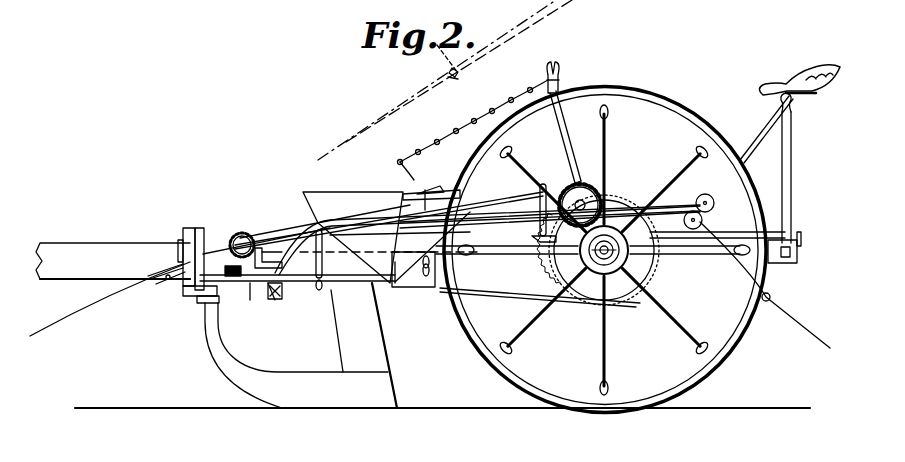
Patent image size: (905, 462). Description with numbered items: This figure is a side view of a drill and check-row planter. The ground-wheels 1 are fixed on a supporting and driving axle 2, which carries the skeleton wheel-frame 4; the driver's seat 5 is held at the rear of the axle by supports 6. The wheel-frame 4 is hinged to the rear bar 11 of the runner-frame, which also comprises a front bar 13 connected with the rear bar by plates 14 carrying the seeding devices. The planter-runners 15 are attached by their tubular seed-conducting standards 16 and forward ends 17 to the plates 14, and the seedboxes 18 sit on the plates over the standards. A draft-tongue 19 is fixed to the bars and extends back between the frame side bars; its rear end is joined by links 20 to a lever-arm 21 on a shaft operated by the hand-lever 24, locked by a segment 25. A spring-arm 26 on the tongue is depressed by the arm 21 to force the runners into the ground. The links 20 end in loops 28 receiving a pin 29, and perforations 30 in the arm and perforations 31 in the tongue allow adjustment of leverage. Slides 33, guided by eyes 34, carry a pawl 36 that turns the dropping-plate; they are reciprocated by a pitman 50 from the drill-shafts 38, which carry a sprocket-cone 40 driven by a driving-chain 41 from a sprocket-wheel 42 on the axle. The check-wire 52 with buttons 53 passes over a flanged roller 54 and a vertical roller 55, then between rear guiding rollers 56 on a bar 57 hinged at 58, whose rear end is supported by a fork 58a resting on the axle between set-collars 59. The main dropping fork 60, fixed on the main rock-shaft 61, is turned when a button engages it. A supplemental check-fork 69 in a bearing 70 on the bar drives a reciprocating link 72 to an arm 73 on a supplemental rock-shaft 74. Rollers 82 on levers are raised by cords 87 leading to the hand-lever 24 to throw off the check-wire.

The ground-wheels 1 is at (656, 106).
The supporting and driving axle 2 is at (628, 260).
The wheel-frame 4 is at (733, 232).
The driver's seat 5 is at (799, 69).
The seat supports 6 is at (755, 127).
The rear bar of runner-frame 11 is at (274, 300).
The front bar of runner-frame 13 is at (190, 294).
The plates 14 is at (246, 292).
The planter-runners 15 is at (442, 418).
The tubular seed-conducting standards 16 is at (373, 345).
The forward ends of runners 17 is at (289, 355).
The seedboxes 18 is at (353, 237).
The draft-tongue 19 is at (113, 253).
The links 20 is at (405, 198).
The lever-arm 21 is at (446, 196).
The hand-lever 24 is at (562, 144).
The segment 25 is at (598, 193).
The spring-arm 26 is at (420, 193).
The loops 28 is at (455, 260).
The pin 29 is at (414, 287).
The perforations of lever-arm 30 is at (418, 178).
The perforations of tongue 31 is at (422, 264).
The slides 33 is at (360, 283).
The eyes 34 is at (392, 275).
The pawl 36 is at (285, 225).
The drill-shafts 38 is at (268, 232).
The sprocket-cone 40 is at (242, 232).
The driving-chain 41 is at (572, 300).
The sprocket-wheel 42 is at (648, 300).
The pitman 50 is at (258, 277).
The check-wire 52 is at (78, 316).
The buttons 53 is at (771, 297).
The roller 54 is at (212, 250).
The vertical roller 55 is at (200, 228).
The rear guiding rollers 56 is at (700, 195).
The bar 57 is at (380, 134).
The hinge 58 is at (284, 280).
The fork 58a is at (556, 258).
The set-collars 59 is at (600, 264).
The main dropping fork 60 is at (318, 260).
The main rock-shaft 61 is at (311, 300).
The supplemental check-fork 69 is at (538, 192).
The bearing 70 is at (532, 238).
The reciprocating link 72 is at (343, 230).
The arm 73 is at (155, 278).
The supplemental rock-shaft 74 is at (166, 284).
The rollers 82 is at (184, 238).
The cords 87 is at (452, 130).